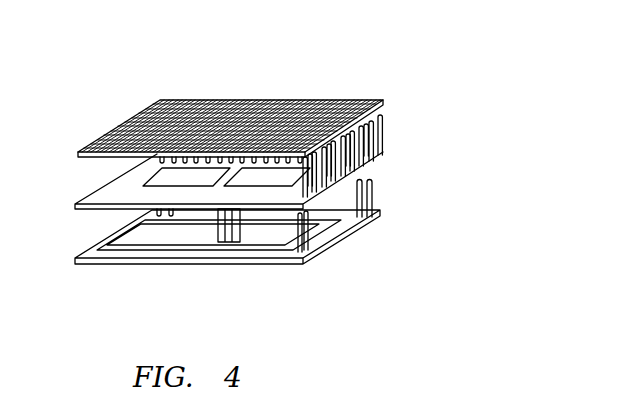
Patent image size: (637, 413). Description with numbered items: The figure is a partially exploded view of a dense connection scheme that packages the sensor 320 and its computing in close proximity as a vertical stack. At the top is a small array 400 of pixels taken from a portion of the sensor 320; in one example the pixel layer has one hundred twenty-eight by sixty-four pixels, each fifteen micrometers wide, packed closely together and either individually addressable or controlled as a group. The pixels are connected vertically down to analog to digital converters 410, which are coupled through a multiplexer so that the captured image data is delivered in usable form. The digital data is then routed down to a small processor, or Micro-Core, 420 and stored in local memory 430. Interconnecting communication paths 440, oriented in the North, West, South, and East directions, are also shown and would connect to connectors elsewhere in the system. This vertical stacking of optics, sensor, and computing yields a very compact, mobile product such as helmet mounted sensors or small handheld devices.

The sensor 320 is at (323, 80).
The small array of pixels 400 is at (107, 120).
The analog to digital converters 410 is at (148, 178).
The small processor (Micro-Core) 420 is at (133, 232).
The local memory 430 is at (242, 243).
The interconnecting communication paths 440 is at (138, 228).